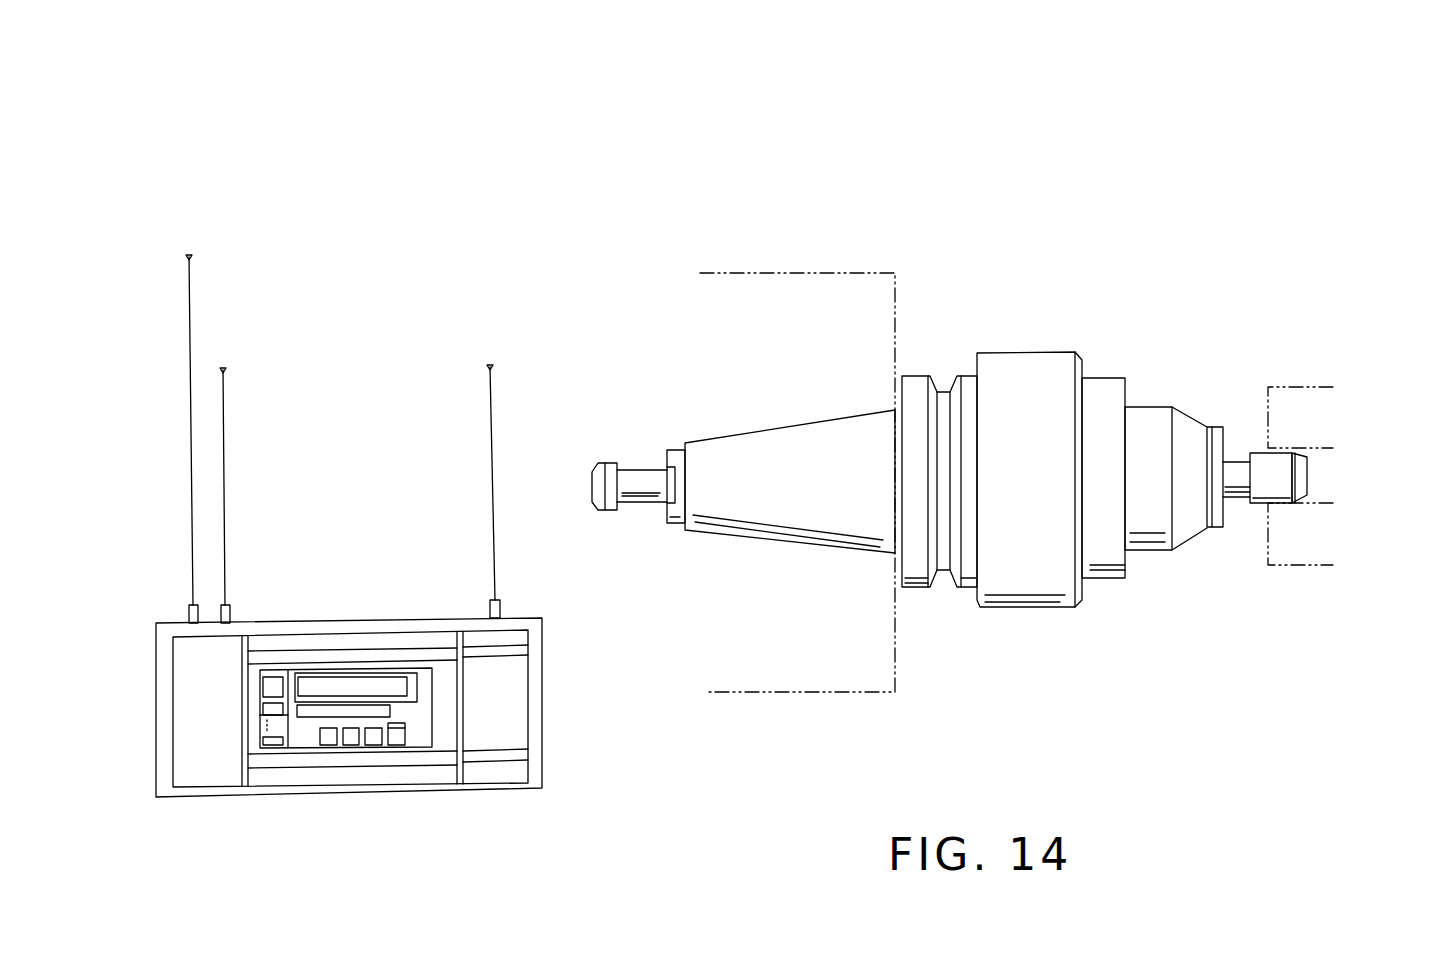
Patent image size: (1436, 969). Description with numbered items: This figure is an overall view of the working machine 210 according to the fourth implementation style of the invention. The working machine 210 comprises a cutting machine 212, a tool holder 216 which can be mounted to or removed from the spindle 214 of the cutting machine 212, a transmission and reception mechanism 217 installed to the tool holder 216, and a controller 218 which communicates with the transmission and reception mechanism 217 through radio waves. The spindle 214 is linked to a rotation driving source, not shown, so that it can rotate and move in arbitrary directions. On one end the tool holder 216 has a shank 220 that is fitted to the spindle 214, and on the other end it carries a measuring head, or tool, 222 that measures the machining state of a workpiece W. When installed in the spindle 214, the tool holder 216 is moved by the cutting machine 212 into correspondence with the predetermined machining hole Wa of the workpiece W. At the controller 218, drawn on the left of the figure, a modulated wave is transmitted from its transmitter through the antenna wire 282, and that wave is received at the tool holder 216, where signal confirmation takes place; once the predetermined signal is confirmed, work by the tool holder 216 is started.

The working machine 210 is at (803, 98).
The cutting machine 212 is at (858, 213).
The spindle 214 is at (733, 340).
The tool holder 216 is at (1068, 303).
The transmission and reception mechanism 217 is at (1032, 333).
The controller 218 is at (322, 587).
The shank 220 is at (735, 473).
The measuring head (tool) 222 is at (1262, 370).
The antenna wire 282 is at (223, 422).
The workpiece W is at (1310, 407).
The machining hole Wa is at (1320, 502).